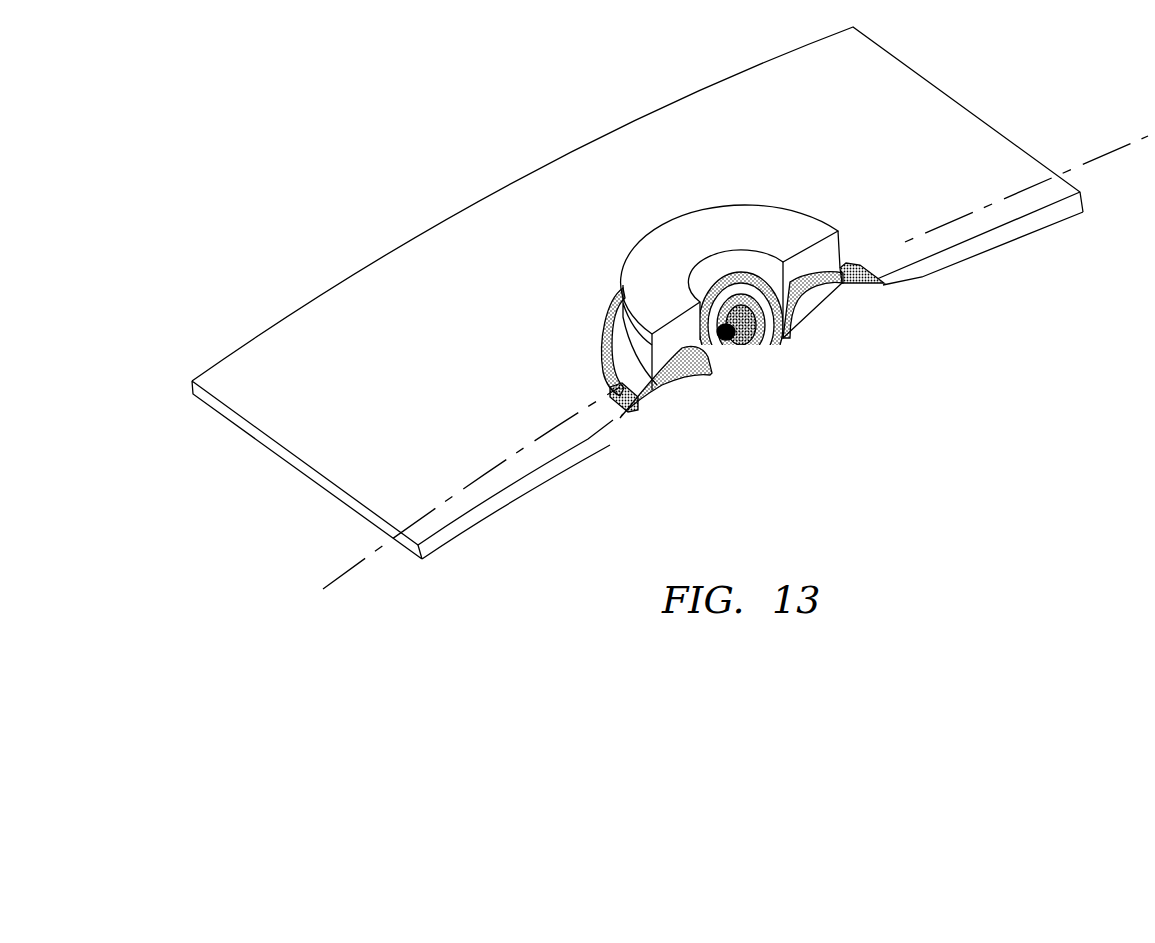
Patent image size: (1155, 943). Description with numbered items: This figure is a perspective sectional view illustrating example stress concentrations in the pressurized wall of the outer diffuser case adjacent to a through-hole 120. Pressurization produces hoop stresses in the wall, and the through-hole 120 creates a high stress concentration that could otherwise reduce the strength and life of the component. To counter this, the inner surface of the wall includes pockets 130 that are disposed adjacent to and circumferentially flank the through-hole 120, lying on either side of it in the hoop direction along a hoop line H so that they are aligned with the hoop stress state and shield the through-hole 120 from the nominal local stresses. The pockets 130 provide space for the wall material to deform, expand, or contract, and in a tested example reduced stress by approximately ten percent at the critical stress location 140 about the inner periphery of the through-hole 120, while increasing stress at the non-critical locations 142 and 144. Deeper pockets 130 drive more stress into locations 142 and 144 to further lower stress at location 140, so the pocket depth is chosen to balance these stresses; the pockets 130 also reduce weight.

The through-hole 120 is at (748, 244).
The pocket 130 is at (883, 283).
The critical stress location 140 is at (727, 332).
The non-critical location 142 is at (620, 425).
The non-critical location 144 is at (844, 266).
The hoop line H is at (1103, 152).